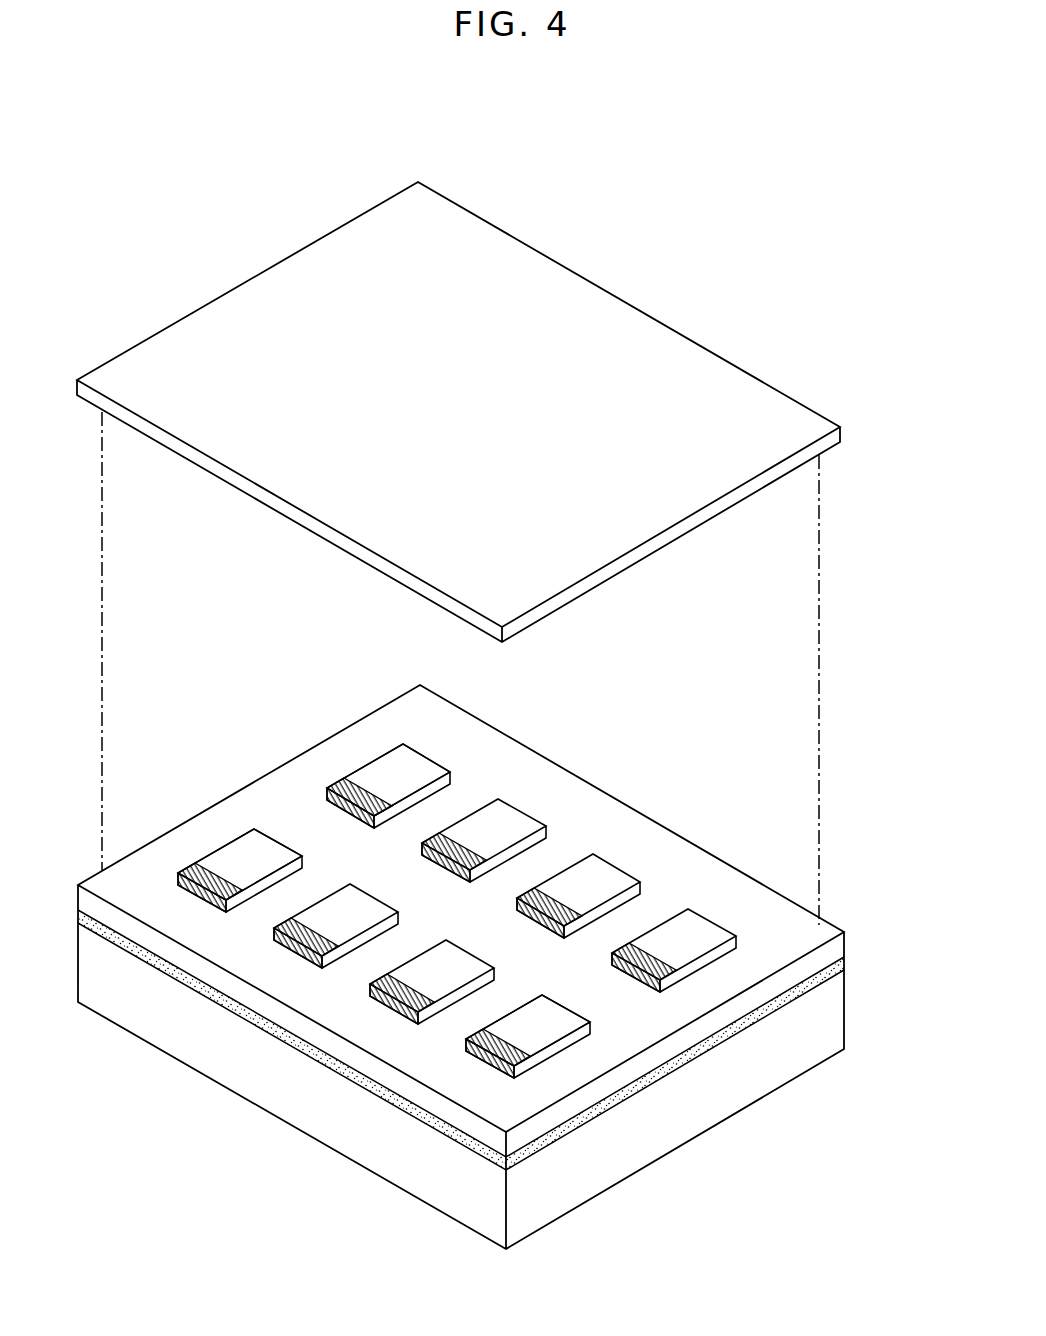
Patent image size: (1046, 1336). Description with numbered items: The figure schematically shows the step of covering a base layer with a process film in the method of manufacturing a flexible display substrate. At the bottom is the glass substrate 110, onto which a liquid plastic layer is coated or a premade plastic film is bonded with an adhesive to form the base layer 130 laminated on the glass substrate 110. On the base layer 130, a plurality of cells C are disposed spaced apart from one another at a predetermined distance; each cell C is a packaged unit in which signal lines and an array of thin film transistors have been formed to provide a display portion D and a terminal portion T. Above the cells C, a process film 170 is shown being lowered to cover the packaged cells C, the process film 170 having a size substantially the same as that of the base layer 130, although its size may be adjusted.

The process film 170 is at (722, 395).
The base layer 130 is at (828, 956).
The glass substrate 110 is at (828, 1016).
The cell C is at (408, 933).
The terminal portion T is at (340, 783).
The display portion D is at (408, 768).